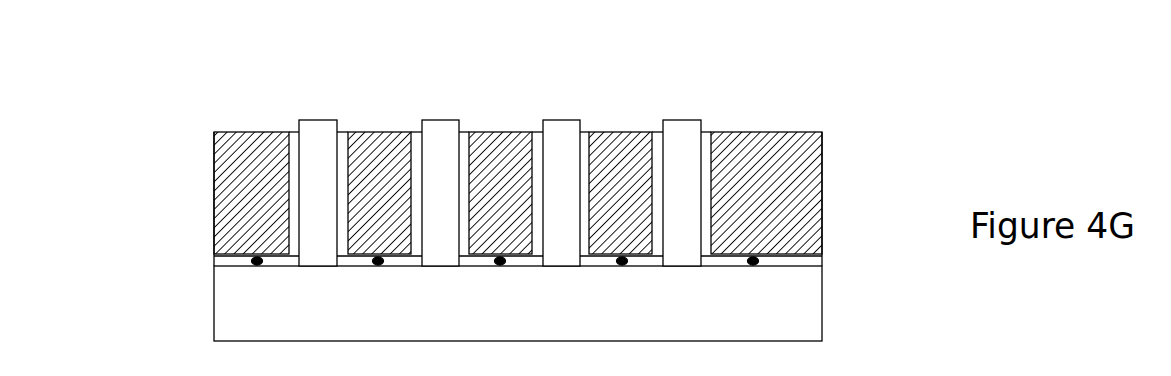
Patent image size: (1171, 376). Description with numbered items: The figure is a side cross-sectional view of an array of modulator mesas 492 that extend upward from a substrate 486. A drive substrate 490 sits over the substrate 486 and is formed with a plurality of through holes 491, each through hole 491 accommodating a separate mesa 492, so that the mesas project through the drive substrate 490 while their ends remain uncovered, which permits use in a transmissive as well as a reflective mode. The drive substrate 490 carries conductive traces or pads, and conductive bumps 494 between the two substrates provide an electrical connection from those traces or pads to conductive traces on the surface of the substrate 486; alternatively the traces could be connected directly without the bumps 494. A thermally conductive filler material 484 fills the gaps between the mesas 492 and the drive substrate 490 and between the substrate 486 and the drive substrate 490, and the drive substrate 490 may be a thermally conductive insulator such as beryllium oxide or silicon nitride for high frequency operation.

The thermally conductive filler material 484 is at (808, 258).
The substrate 486 is at (527, 313).
The drive substrate 490 is at (787, 132).
The through hole 491 is at (440, 73).
The modulator mesa 492 is at (448, 132).
The conductive bump 494 is at (252, 260).